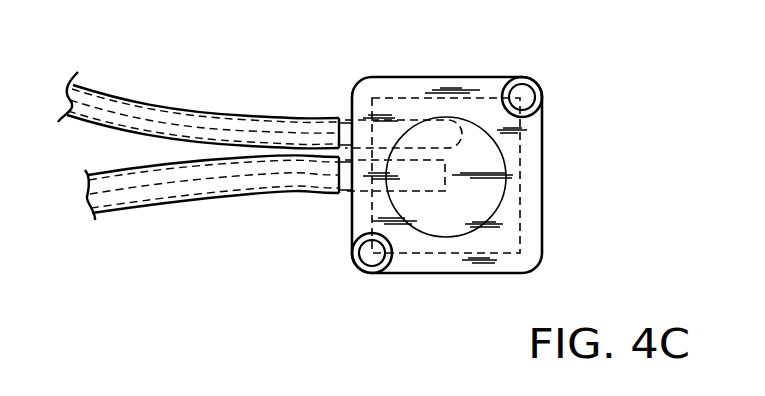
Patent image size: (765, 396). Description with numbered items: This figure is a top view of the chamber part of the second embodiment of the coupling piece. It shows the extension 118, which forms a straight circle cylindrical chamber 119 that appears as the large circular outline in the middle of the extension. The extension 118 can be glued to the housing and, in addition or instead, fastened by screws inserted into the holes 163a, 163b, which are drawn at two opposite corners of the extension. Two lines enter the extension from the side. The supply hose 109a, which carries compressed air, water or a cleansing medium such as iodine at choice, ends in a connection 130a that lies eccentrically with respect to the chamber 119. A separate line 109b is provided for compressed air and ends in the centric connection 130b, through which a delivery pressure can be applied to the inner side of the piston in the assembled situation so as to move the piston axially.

The supply hose 109a is at (190, 125).
The separate line 109b is at (192, 185).
The extension 118 is at (455, 90).
The chamber 119 is at (460, 223).
The connection 130a is at (450, 133).
The centric connection 130b is at (438, 178).
The hole 163a is at (528, 97).
The hole 163b is at (372, 250).